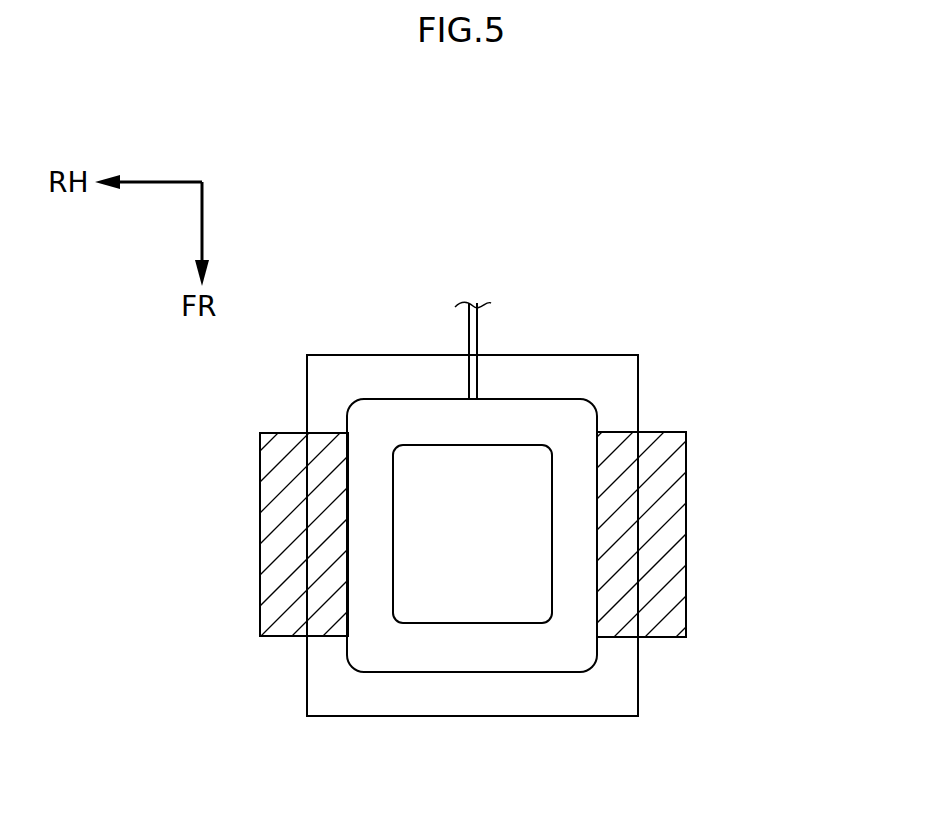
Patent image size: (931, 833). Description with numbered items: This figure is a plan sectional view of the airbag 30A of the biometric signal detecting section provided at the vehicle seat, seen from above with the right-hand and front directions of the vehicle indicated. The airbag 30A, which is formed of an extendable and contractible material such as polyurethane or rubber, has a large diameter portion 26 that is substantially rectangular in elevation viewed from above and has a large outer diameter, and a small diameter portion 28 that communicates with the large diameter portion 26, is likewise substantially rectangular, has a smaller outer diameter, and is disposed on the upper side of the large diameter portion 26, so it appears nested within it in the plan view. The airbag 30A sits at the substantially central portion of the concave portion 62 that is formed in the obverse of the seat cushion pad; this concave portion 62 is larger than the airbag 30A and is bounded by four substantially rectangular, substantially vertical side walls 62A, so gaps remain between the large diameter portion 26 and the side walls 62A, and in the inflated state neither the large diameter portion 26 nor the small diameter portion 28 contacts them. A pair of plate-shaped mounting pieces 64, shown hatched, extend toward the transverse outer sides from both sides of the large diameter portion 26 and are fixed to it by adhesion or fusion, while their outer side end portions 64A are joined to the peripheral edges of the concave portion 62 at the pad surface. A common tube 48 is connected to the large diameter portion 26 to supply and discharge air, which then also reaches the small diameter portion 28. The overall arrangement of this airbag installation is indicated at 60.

The bracket assembly 60 is at (518, 273).
The concave portion 62 is at (547, 366).
The side walls 62A is at (597, 355).
The mounting pieces 64 is at (260, 487).
The outer side end portions 64A is at (272, 553).
The large diameter portion 26 is at (547, 650).
The small diameter portion 28 is at (470, 592).
The common tube 48 is at (477, 328).
The airbag 30A is at (438, 397).